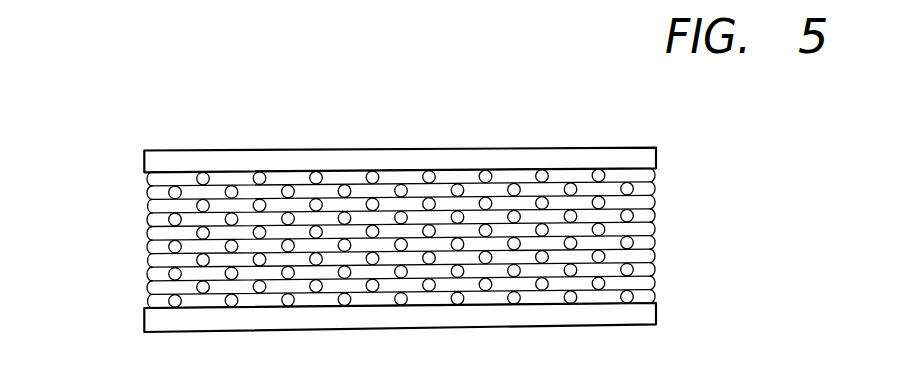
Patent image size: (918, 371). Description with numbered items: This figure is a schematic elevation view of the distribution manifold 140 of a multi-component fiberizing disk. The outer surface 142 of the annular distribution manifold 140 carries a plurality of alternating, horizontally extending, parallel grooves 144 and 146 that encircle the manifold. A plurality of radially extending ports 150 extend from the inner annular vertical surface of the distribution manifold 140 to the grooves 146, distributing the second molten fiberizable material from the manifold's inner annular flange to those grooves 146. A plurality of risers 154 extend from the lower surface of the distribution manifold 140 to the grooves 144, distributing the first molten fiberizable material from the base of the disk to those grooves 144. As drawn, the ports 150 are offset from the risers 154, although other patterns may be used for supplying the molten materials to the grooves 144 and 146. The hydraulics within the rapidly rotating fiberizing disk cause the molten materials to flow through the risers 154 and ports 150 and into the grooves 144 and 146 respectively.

The distribution manifold 140 is at (532, 106).
The outer surface 142 is at (665, 231).
The grooves 144 is at (654, 190).
The grooves 146 is at (655, 171).
The ports 150 is at (203, 177).
The risers 154 is at (288, 190).